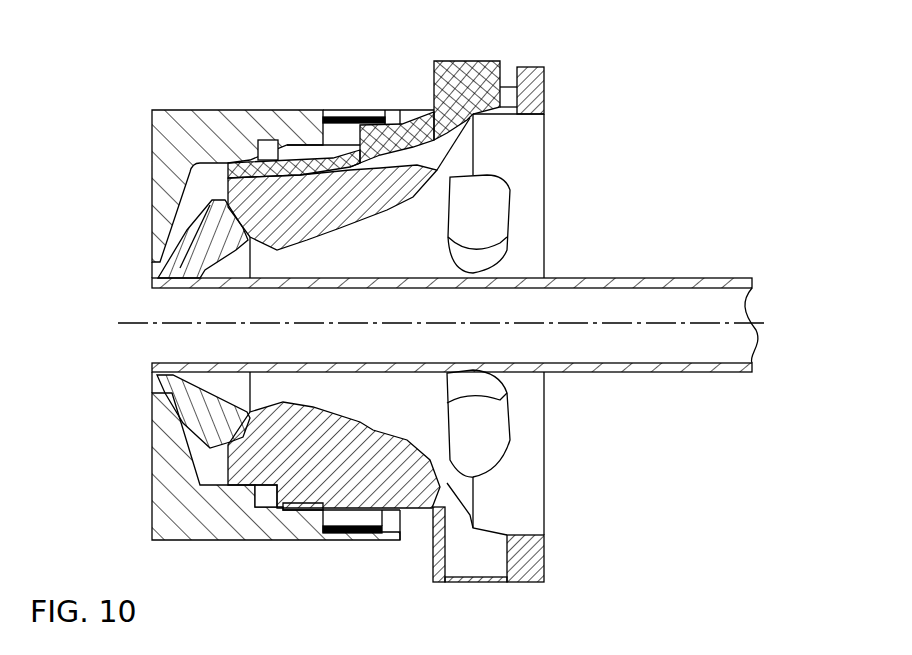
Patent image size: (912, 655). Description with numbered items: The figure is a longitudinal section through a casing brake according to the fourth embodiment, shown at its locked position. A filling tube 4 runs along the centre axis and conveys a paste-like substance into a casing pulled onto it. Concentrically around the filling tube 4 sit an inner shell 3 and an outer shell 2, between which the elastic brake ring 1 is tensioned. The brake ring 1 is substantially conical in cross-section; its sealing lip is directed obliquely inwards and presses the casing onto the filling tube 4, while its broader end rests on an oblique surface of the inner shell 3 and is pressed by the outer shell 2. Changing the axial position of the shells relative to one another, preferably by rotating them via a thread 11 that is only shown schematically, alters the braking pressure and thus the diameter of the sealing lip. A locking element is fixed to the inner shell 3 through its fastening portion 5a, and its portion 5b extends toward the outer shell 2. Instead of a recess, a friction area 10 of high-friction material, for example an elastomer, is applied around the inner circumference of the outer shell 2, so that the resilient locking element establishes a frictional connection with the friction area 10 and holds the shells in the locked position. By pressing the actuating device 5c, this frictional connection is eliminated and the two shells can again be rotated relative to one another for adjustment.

The brake ring 1 is at (172, 260).
The outer shell 2 is at (172, 507).
The inner shell 3 is at (418, 510).
The filling tube 4 is at (665, 277).
The fastening portion 5a is at (237, 162).
The portion 5b is at (390, 112).
The actuating device 5c is at (470, 60).
The friction area 10 is at (336, 117).
The thread 11 is at (307, 507).